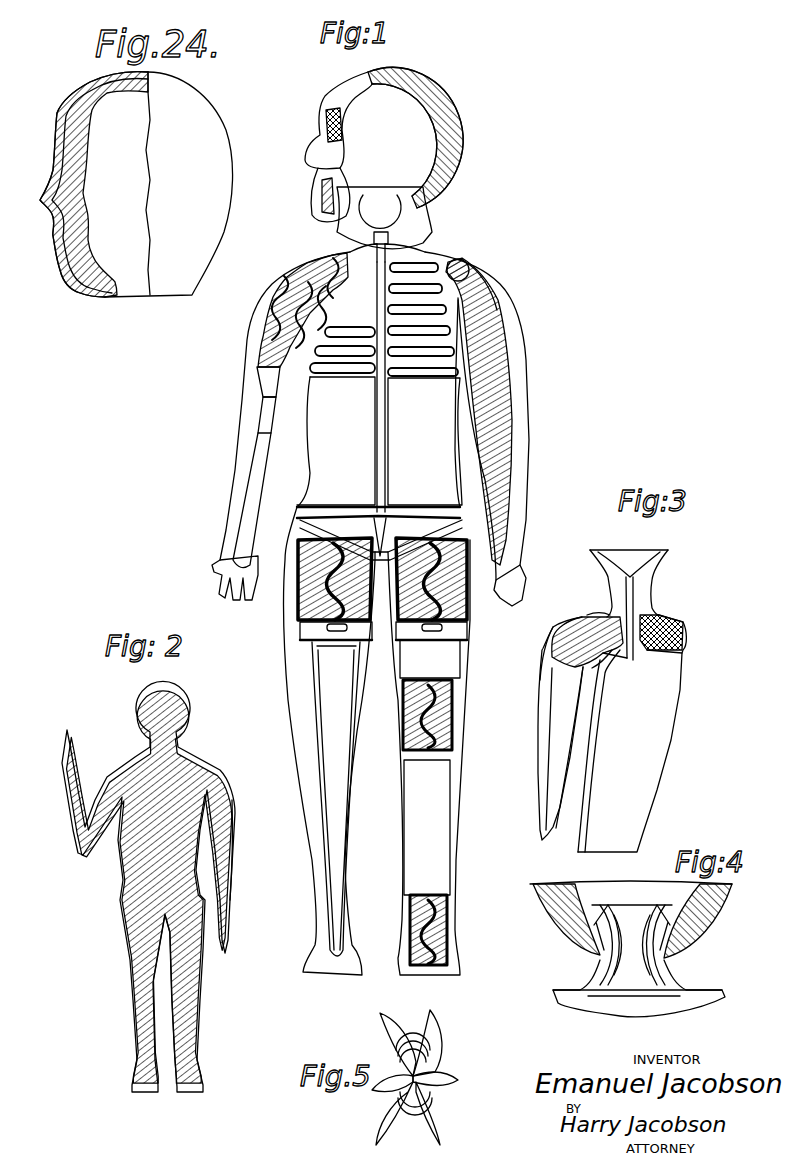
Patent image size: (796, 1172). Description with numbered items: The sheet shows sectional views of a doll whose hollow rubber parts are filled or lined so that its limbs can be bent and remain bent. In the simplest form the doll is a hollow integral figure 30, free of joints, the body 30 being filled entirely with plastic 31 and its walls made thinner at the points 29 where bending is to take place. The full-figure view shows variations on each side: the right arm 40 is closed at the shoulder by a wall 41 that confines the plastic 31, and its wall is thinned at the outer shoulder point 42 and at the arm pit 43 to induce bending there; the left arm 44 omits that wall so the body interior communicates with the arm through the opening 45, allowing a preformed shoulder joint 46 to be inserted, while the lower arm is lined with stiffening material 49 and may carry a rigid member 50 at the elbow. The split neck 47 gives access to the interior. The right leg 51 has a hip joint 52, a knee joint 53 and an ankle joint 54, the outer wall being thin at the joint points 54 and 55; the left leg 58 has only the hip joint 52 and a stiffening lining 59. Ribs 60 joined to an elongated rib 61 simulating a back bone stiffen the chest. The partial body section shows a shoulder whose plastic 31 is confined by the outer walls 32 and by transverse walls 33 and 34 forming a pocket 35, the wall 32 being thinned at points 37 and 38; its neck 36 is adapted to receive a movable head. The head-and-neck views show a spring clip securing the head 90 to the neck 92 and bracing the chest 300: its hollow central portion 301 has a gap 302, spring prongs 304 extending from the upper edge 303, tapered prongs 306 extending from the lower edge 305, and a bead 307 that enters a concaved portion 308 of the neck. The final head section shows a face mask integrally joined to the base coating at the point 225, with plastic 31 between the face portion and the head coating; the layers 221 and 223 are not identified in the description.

In FIG. 2, the bending points 29 is at (202, 768).
In FIG. 2, the hollow integral figure 30 is at (222, 770).
In FIG. 24, the plastic 31 is at (56, 140).
In FIG. 1, the plastic 31 is at (500, 308).
In FIG. 2, the plastic 31 is at (222, 808).
In FIG. 3, the plastic 31 is at (578, 618).
In FIG. 3, the outer walls 32 is at (542, 673).
In FIG. 3, the transverse wall 33 is at (627, 637).
In FIG. 3, the transverse wall 34 is at (557, 673).
In FIG. 3, the pocket 35 is at (600, 652).
In FIG. 3, the neck 36 is at (652, 598).
In FIG. 4, the neck 36 is at (602, 970).
In FIG. 3, the thinned wall point 37 is at (587, 615).
In FIG. 3, the thinned wall point 38 is at (583, 667).
In FIG. 1, the arm 40 is at (518, 378).
In FIG. 1, the shoulder wall 41 is at (440, 252).
In FIG. 1, the outer shoulder wall point 42 is at (466, 262).
In FIG. 1, the arm pit 43 is at (480, 280).
In FIG. 1, the arm 44 is at (256, 386).
In FIG. 1, the opening 45 is at (344, 262).
In FIG. 1, the preformed shoulder joint 46 is at (268, 316).
In FIG. 1, the neck 47 is at (340, 235).
In FIG. 1, the stiffening material 49 is at (262, 425).
In FIG. 1, the rigid member 50 is at (268, 412).
In FIG. 1, the right leg 51 is at (465, 664).
In FIG. 1, the hip joint 52 is at (300, 523).
In FIG. 1, the knee joint 53 is at (453, 720).
In FIG. 1, the ankle joint 54 is at (468, 552).
In FIG. 1, the joint bending point 55 is at (398, 520).
In FIG. 1, the left leg 58 is at (316, 706).
In FIG. 1, the stiffening lining 59 is at (316, 680).
In FIG. 1, the ribs 60 is at (338, 372).
In FIG. 1, the elongated rib 61 is at (376, 410).
In FIG. 4, the head 90 is at (556, 910).
In FIG. 4, the neck 92 is at (668, 972).
In FIG. 24, the outer head liner 221 is at (53, 161).
In FIG. 24, the head padding 223 is at (78, 148).
In FIG. 24, the joining point 225 is at (88, 287).
In FIG. 4, the chest 300 is at (574, 1000).
In FIG. 4, the central portion 301 is at (652, 944).
In FIG. 5, the central portion 301 is at (440, 1092).
In FIG. 4, the gap 302 is at (644, 910).
In FIG. 5, the gap 302 is at (414, 1120).
In FIG. 4, the upper edge 303 is at (626, 910).
In FIG. 5, the upper edge 303 is at (428, 1058).
In FIG. 5, the spring prongs 304 is at (432, 1024).
In FIG. 4, the lower edge 305 is at (616, 950).
In FIG. 5, the lower edge 305 is at (388, 1084).
In FIG. 4, the tapered prongs 306 is at (600, 1002).
In FIG. 5, the tapered prongs 306 is at (386, 1116).
In FIG. 4, the bead 307 is at (596, 944).
In FIG. 4, the concaved portion 308 is at (668, 952).